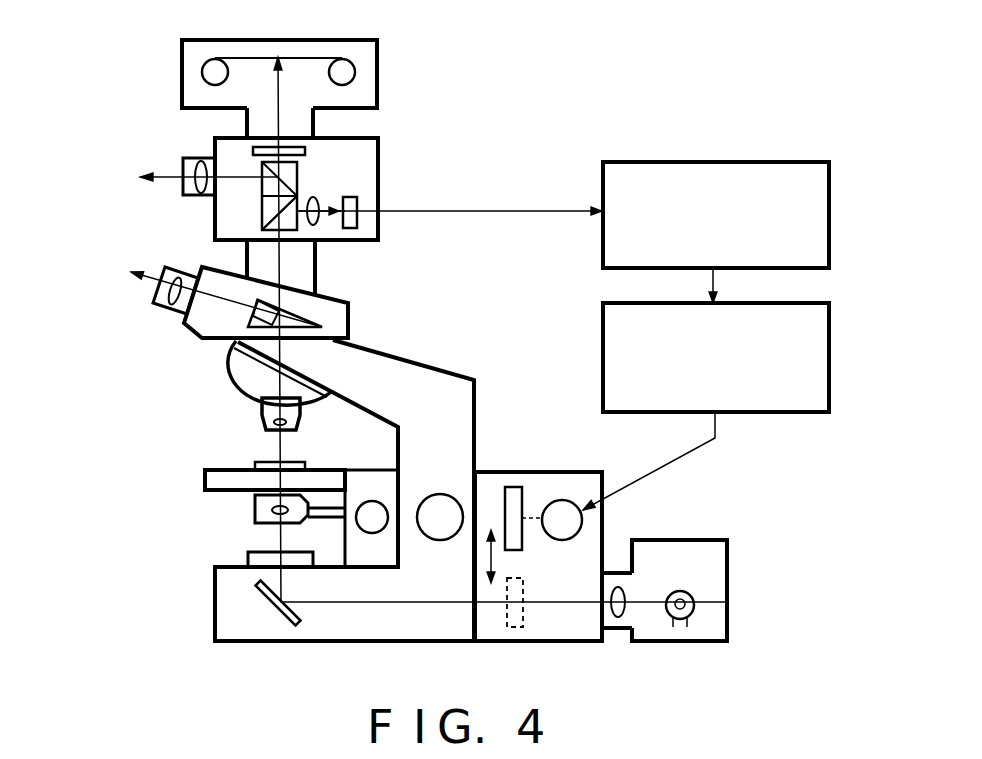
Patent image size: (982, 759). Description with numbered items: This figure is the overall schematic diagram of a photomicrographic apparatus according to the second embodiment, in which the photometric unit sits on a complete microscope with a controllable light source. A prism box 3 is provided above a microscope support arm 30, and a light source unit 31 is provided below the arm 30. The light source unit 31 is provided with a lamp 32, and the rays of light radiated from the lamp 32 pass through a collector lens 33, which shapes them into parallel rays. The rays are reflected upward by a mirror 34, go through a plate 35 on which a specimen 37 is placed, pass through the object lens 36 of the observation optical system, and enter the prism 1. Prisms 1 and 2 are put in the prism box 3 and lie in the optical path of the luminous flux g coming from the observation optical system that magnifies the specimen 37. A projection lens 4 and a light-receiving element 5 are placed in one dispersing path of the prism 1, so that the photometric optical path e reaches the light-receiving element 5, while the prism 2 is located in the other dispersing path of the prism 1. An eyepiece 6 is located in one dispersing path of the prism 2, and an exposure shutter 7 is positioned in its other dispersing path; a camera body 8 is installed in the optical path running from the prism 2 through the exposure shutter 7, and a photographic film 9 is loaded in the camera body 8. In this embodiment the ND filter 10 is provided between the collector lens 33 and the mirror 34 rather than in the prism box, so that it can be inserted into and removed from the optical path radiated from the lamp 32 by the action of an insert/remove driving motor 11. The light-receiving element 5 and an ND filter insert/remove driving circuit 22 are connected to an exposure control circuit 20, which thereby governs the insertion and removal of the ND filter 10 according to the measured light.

The prism 1 is at (300, 197).
The prism 2 is at (298, 173).
The prism box 3 is at (380, 222).
The projection lens 4 is at (317, 225).
The light-receiving element 5 is at (358, 200).
The eyepiece 6 is at (199, 158).
The exposure shutter 7 is at (306, 148).
The camera body 8 is at (379, 87).
The photographic film 9 is at (320, 57).
The ND filter 10 is at (512, 487).
The insert/remove driving motor 11 is at (562, 500).
The exposure control circuit 20 is at (831, 220).
The ND filter insert/remove driving circuit 22 is at (831, 360).
The microscope support arm 30 is at (450, 373).
The light source unit 31 is at (681, 540).
The lamp 32 is at (695, 603).
The collector lens 33 is at (620, 619).
The mirror 34 is at (280, 618).
The plate 35 is at (205, 479).
The object lens 36 is at (262, 410).
The specimen 37 is at (298, 458).
The luminous flux g is at (275, 262).
The photometric optical path e is at (329, 215).